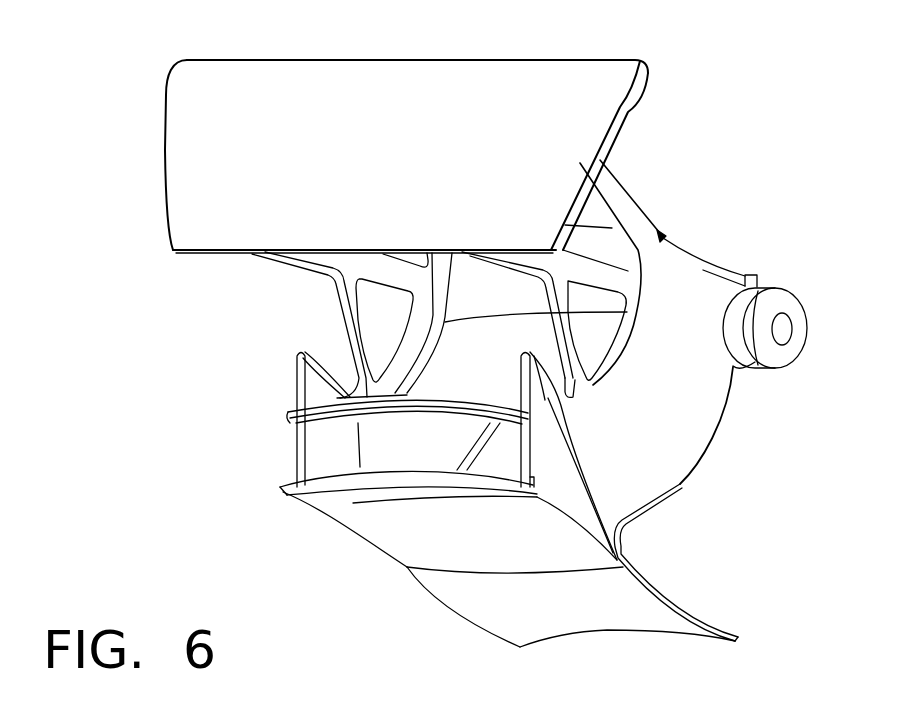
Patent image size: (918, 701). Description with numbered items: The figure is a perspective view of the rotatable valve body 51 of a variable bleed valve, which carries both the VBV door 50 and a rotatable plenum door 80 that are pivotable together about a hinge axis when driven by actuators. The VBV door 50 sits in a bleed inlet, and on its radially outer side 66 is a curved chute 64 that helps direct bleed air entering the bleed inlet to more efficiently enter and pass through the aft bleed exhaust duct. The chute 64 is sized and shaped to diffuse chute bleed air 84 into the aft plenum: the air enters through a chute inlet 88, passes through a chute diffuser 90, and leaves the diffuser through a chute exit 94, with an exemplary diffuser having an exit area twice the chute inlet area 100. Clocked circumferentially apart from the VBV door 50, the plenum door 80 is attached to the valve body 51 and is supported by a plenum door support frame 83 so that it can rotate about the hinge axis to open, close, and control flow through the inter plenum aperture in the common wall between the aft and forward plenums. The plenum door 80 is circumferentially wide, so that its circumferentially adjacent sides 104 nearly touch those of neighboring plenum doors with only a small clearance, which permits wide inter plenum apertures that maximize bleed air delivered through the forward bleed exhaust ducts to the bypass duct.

The VBV door 50 is at (595, 610).
The rotatable valve body 51 is at (312, 582).
The chute 64 is at (670, 403).
The radially outer side 66 is at (580, 533).
The rotatable plenum door 80 is at (596, 80).
The plenum door support frame 83 is at (627, 217).
The chute bleed air 84 is at (318, 450).
The chute inlet 88 is at (387, 455).
The chute diffuser 90 is at (393, 443).
The chute exit 94 is at (703, 261).
The chute inlet area 100 is at (417, 455).
The circumferentially adjacent sides 104 is at (625, 102).